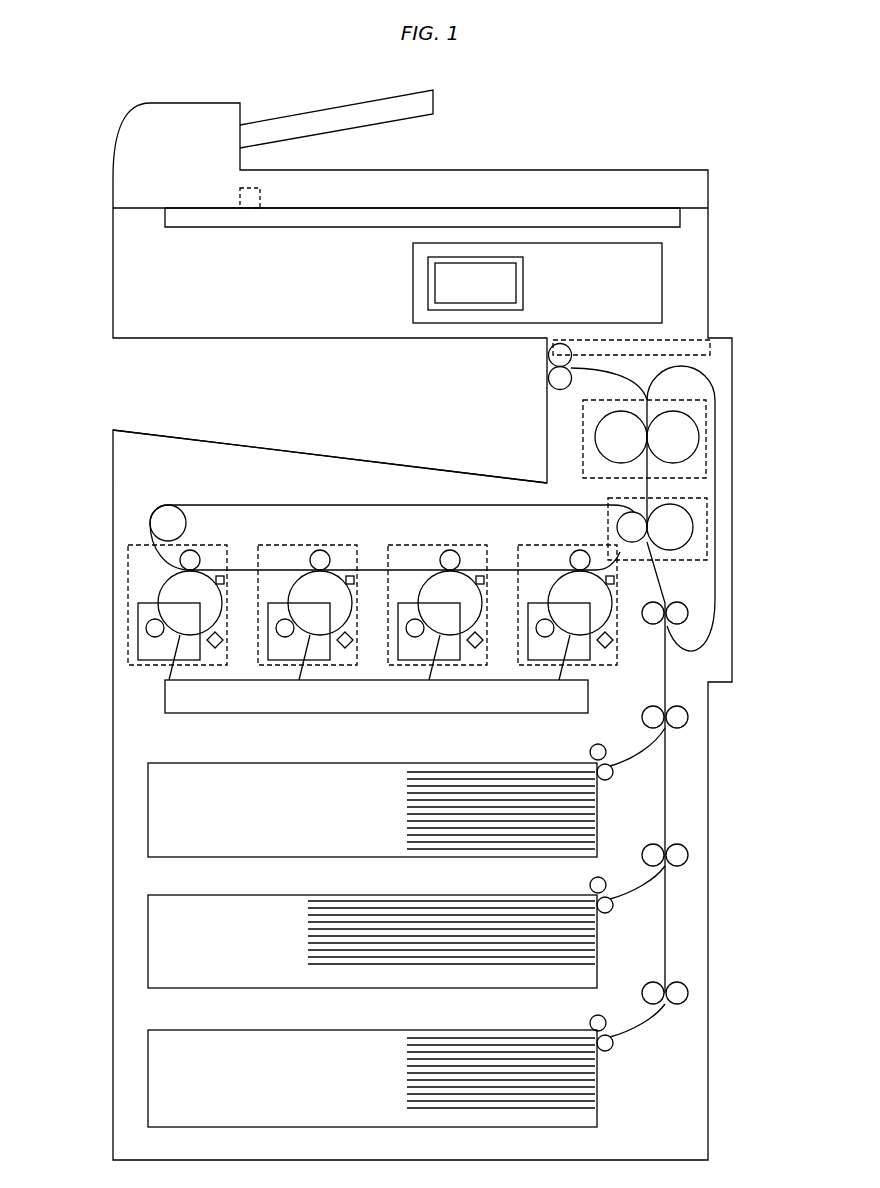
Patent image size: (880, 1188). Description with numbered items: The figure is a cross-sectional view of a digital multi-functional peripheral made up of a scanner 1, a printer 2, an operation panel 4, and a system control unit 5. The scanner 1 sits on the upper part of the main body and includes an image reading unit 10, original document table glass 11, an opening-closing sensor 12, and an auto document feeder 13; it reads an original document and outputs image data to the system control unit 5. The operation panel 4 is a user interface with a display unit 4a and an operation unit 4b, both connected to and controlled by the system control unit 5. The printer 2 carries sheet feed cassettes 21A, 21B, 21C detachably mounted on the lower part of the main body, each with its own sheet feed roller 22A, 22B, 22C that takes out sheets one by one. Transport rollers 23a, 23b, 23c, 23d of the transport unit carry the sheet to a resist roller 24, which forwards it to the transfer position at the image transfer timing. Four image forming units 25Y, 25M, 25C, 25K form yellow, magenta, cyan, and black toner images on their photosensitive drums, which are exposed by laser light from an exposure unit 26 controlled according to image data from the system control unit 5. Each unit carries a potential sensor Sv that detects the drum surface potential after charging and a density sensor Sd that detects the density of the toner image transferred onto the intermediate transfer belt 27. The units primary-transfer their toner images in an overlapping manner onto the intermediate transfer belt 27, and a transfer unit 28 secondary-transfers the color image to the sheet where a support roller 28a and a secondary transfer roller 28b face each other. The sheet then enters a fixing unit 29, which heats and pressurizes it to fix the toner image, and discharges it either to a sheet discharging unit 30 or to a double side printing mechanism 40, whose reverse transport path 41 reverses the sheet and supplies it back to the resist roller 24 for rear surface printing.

The scanner 1 is at (427, 612).
The printer 2 is at (681, 444).
The operation panel 4 is at (563, 283).
The display unit 4a is at (435, 290).
The operation unit 4b is at (428, 270).
The system control unit 5 is at (712, 347).
The image reading unit 10 is at (125, 282).
The original document table glass 11 is at (605, 213).
The opening-closing sensor 12 is at (240, 200).
The auto document feeder 13 is at (125, 173).
The sheet feed cassette 21A is at (342, 778).
The sheet feed cassette 21B is at (275, 903).
The sheet feed cassette 21C is at (275, 1045).
The sheet feed roller 22A is at (592, 750).
The sheet feed roller 22B is at (592, 884).
The sheet feed roller 22C is at (592, 1022).
The transport roller 23a is at (680, 716).
The transport roller 23b is at (680, 853).
The transport roller 23c is at (680, 991).
The transport roller 23d is at (548, 357).
The resist roller 24 is at (680, 613).
The image forming unit 25Y is at (212, 545).
The image forming unit 25M is at (317, 545).
The image forming unit 25C is at (412, 545).
The image forming unit 25K is at (592, 545).
The exposure unit 26 is at (182, 716).
The intermediate transfer belt 27 is at (262, 505).
The transfer unit 28 is at (640, 500).
The support roller 28a is at (625, 522).
The secondary transfer roller 28b is at (673, 530).
The fixing unit 29 is at (706, 428).
The sheet discharging unit 30 is at (380, 462).
The double side printing mechanism 40 is at (717, 482).
The reverse transport path 41 is at (716, 390).
The density sensor Sd is at (222, 577).
The potential sensor Sv is at (216, 648).